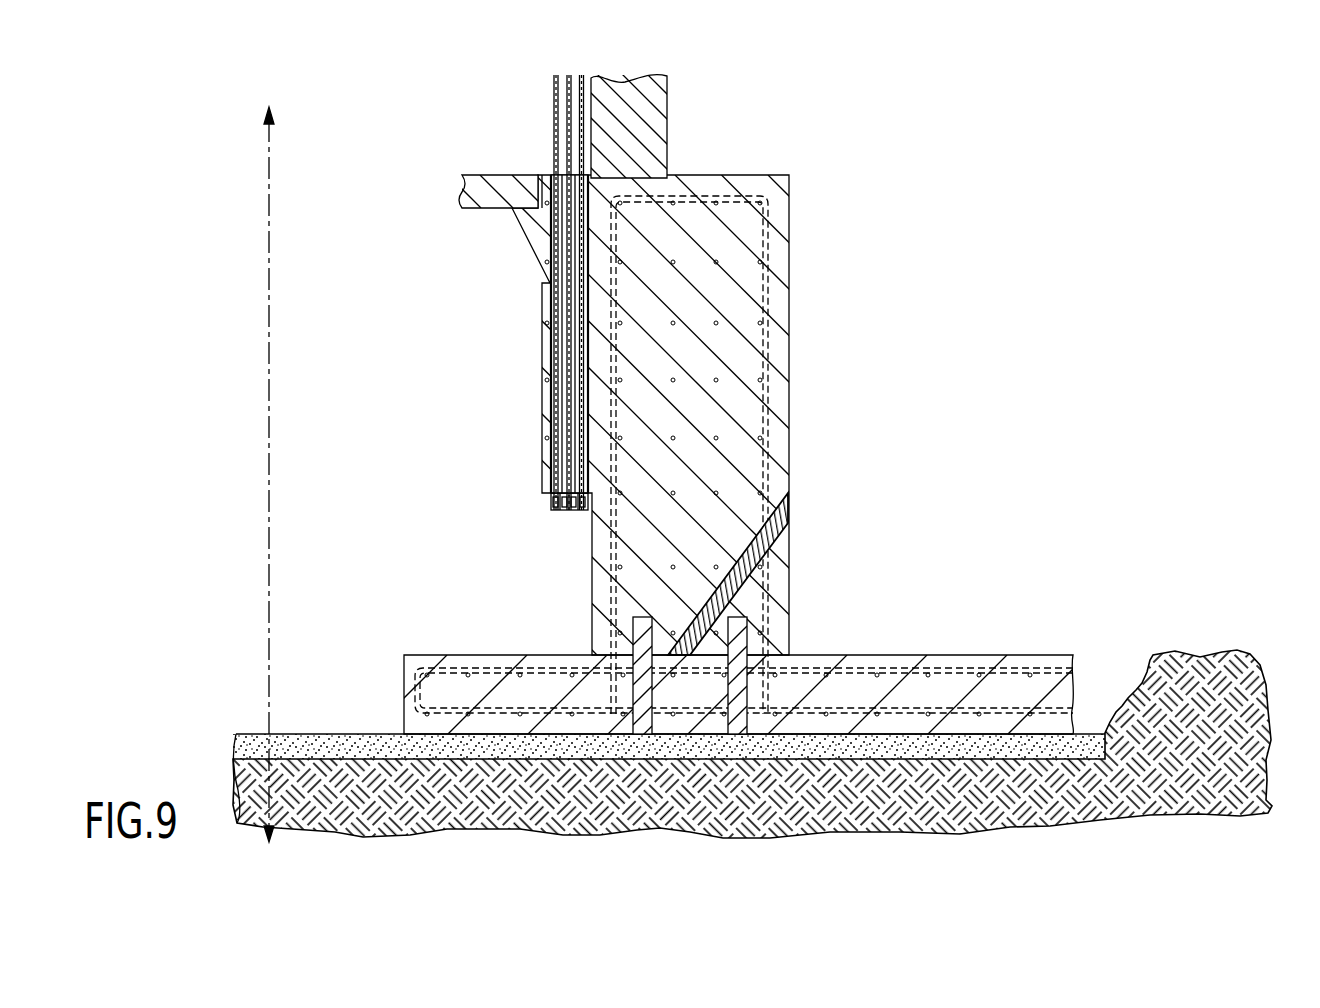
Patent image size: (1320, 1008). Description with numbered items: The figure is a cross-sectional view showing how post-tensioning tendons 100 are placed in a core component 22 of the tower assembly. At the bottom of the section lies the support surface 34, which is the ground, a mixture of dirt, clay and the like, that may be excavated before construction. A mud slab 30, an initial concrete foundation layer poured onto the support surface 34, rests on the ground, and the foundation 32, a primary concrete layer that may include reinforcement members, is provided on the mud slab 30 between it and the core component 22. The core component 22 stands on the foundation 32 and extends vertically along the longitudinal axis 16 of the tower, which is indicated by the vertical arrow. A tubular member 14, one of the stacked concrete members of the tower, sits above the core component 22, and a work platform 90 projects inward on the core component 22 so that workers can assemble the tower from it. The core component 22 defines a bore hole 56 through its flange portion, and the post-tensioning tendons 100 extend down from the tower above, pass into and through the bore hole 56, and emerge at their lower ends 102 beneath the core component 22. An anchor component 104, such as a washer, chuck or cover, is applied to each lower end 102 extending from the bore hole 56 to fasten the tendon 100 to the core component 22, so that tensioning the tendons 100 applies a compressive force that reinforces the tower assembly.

The tubular member 14 is at (688, 102).
The longitudinal axis 16 is at (269, 233).
The core component 22 is at (818, 345).
The mud slab 30 is at (1090, 712).
The foundation 32 is at (1030, 628).
The support surface 34 is at (1232, 636).
The bore hole 56 is at (537, 282).
The work platform 90 is at (458, 158).
The post-tensioning tendon 100 is at (583, 137).
The lower end 102 is at (552, 498).
The anchor component 104 is at (553, 507).